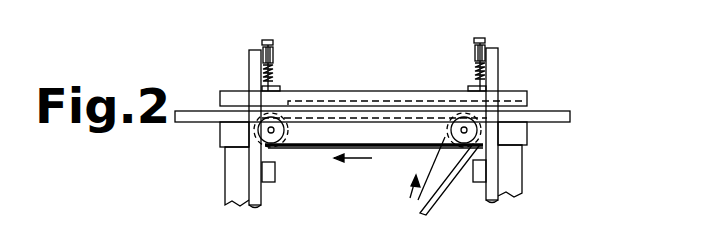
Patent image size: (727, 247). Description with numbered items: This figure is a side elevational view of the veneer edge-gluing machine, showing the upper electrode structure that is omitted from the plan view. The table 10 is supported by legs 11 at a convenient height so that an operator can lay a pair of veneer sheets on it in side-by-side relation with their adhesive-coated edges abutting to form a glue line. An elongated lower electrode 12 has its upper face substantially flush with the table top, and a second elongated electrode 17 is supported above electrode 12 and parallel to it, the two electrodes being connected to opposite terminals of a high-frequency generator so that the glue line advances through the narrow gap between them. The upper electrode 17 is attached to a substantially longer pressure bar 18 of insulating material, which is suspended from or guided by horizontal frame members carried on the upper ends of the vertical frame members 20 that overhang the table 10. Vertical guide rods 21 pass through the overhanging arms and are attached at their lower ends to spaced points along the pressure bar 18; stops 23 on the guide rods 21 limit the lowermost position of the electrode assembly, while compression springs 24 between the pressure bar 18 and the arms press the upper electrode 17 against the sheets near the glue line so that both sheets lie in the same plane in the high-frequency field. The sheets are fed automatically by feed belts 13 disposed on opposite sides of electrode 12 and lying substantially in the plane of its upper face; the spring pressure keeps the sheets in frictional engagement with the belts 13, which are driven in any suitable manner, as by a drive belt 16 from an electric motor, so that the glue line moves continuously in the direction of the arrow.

The table 10 is at (533, 115).
The legs 11 is at (228, 192).
The elongated electrode 12 is at (368, 119).
The feed belts 13 is at (335, 152).
The drive belt 16 is at (430, 208).
The second elongated electrode 17 is at (327, 100).
The pressure bar 18 is at (385, 95).
The vertical frame members 20 is at (258, 192).
The vertical guide rods 21 is at (265, 40).
The stops 23 is at (274, 46).
The compression springs 24 is at (274, 80).